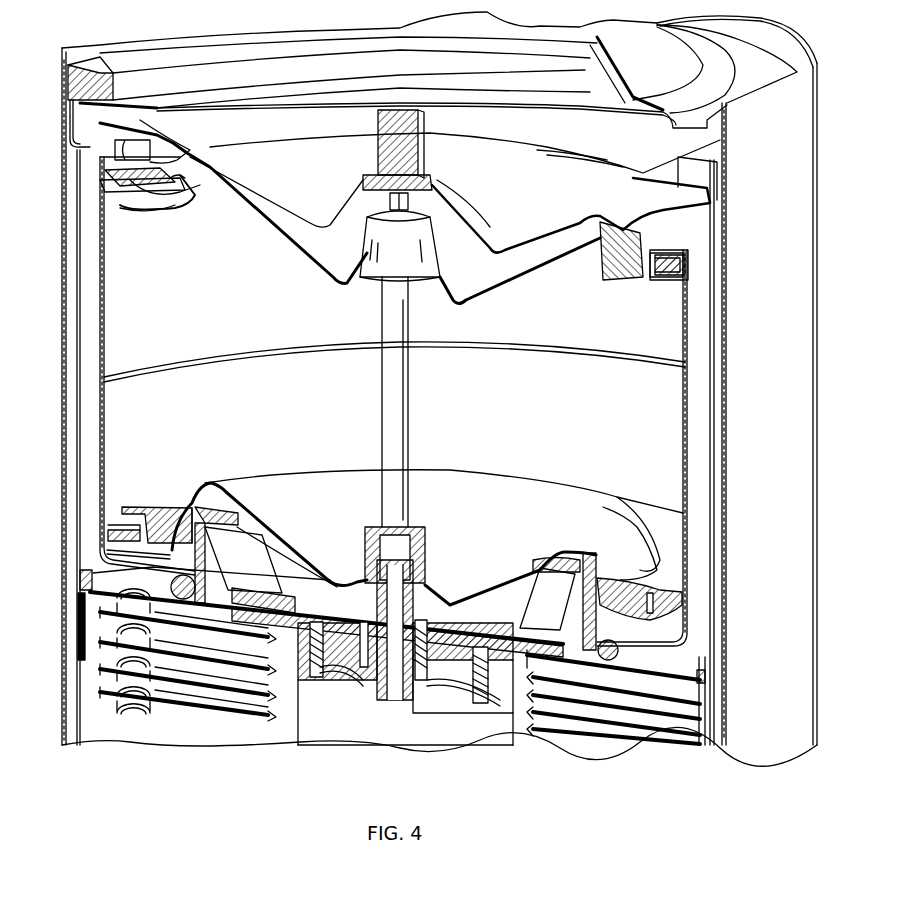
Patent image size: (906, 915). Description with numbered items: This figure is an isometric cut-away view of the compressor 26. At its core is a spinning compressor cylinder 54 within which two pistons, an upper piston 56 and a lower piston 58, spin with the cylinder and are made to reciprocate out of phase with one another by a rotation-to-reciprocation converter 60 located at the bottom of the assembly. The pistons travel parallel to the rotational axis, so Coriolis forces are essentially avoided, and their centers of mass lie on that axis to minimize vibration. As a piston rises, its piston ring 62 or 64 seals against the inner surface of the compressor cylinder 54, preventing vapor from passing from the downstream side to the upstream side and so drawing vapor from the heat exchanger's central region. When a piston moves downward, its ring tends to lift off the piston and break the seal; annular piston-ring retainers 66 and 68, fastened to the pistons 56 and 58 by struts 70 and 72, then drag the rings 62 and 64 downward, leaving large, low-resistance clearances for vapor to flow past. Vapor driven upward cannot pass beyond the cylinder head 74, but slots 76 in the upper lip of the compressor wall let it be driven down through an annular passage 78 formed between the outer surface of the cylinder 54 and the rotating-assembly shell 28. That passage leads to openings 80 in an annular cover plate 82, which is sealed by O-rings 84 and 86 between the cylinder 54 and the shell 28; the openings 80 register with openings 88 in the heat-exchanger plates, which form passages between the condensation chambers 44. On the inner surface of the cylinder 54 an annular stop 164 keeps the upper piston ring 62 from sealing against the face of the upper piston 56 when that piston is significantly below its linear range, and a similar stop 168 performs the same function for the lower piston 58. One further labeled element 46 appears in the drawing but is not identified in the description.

The compressor 26 is at (52, 430).
The rotating-assembly shell 28 is at (80, 278).
The condensation chambers 44 is at (215, 640).
The heat exchanger coil 46 is at (180, 617).
The compressor cylinder 54 is at (107, 240).
The upper piston 56 is at (273, 233).
The lower piston 58 is at (227, 480).
The rotation-to-reciprocation converter 60 is at (450, 732).
The upper piston ring 62 is at (107, 182).
The lower piston ring 64 is at (110, 528).
The annular piston-ring retainer 66 is at (167, 180).
The annular piston-ring retainer 68 is at (133, 507).
The strut 70 is at (623, 257).
The strut 72 is at (162, 513).
The cylinder head 74 is at (313, 180).
The slots 76 is at (157, 151).
The annular passage 78 is at (85, 308).
The openings 80 is at (100, 570).
The annular cover plate 82 is at (165, 580).
The O-ring 84 is at (80, 580).
The O-ring 86 is at (150, 583).
The openings 88 is at (133, 633).
The annular stop 164 is at (305, 352).
The stop 168 is at (100, 547).